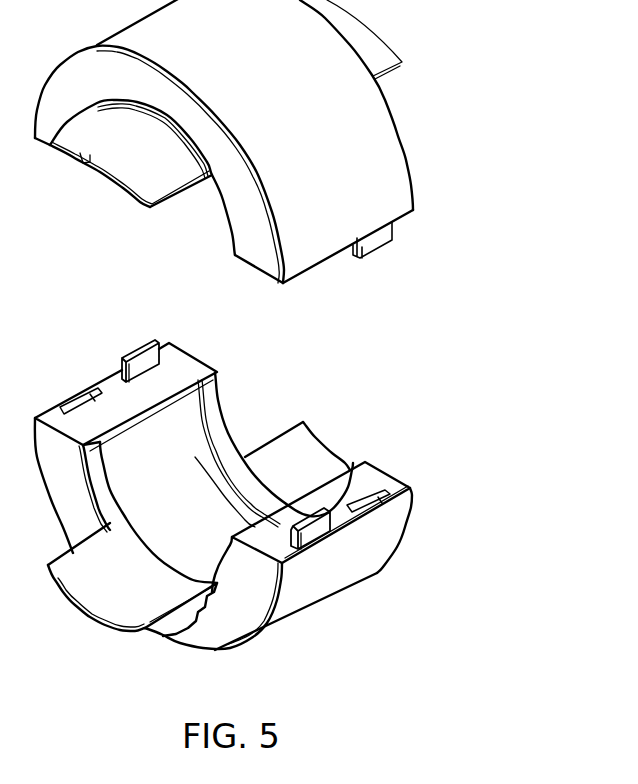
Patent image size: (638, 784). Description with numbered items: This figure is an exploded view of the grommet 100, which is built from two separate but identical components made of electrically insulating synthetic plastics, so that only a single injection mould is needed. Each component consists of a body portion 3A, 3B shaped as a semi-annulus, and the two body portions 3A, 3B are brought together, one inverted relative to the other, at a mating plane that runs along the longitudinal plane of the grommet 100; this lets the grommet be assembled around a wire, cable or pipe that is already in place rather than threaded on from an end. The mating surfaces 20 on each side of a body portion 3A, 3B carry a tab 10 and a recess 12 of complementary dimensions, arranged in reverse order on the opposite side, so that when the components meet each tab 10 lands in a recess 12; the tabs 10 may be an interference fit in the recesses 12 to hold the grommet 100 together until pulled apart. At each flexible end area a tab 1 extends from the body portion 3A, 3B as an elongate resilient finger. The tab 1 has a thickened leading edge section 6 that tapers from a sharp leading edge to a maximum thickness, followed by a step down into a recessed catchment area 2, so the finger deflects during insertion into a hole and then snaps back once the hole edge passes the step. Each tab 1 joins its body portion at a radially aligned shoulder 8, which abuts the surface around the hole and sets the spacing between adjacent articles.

The grommet 100 is at (517, 68).
The body portion 3A is at (395, 182).
The body portion 3B is at (368, 553).
The tab 1 is at (150, 158).
The tab 10 is at (140, 348).
The mating surface 20 is at (383, 478).
The recess 12 is at (387, 503).
The shoulder 8 is at (238, 583).
The recessed catchment area 2 is at (212, 608).
The thickened leading edge section 6 is at (177, 630).